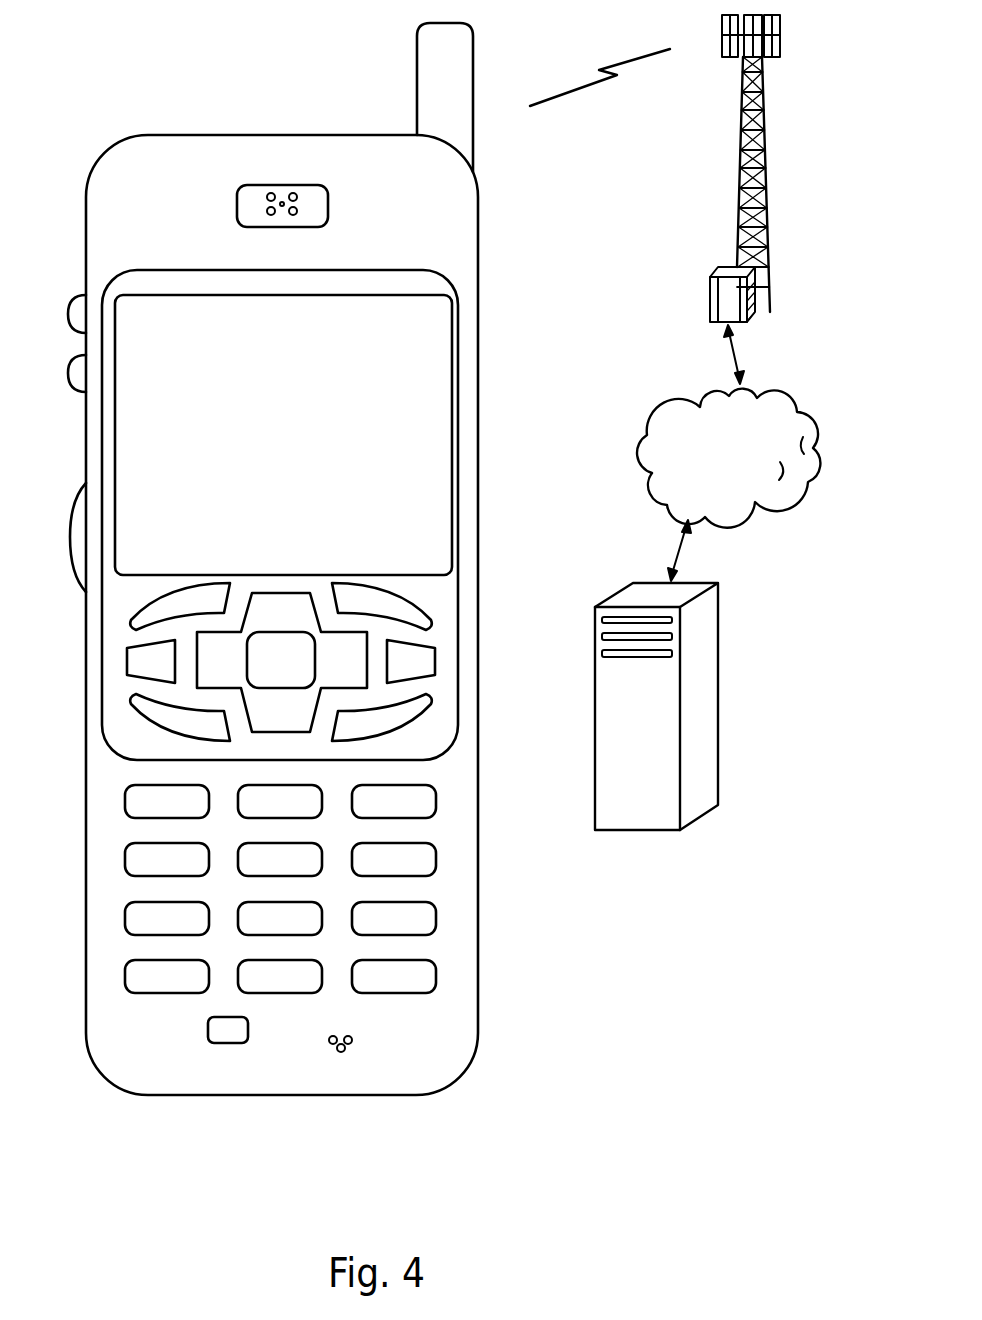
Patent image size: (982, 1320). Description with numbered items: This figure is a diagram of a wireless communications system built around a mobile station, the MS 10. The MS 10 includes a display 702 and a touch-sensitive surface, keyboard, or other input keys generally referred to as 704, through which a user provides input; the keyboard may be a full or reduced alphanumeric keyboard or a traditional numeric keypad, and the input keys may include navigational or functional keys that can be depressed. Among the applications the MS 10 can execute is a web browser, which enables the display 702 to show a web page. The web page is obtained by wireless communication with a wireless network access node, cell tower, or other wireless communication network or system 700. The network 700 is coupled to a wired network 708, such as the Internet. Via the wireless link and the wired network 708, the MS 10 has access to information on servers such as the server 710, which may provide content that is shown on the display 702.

The MS 10 is at (137, 1094).
The wireless communication network 700 is at (737, 181).
The display 702 is at (452, 307).
The input keys 704 is at (488, 582).
The wired network 708 is at (651, 504).
The server 710 is at (638, 830).